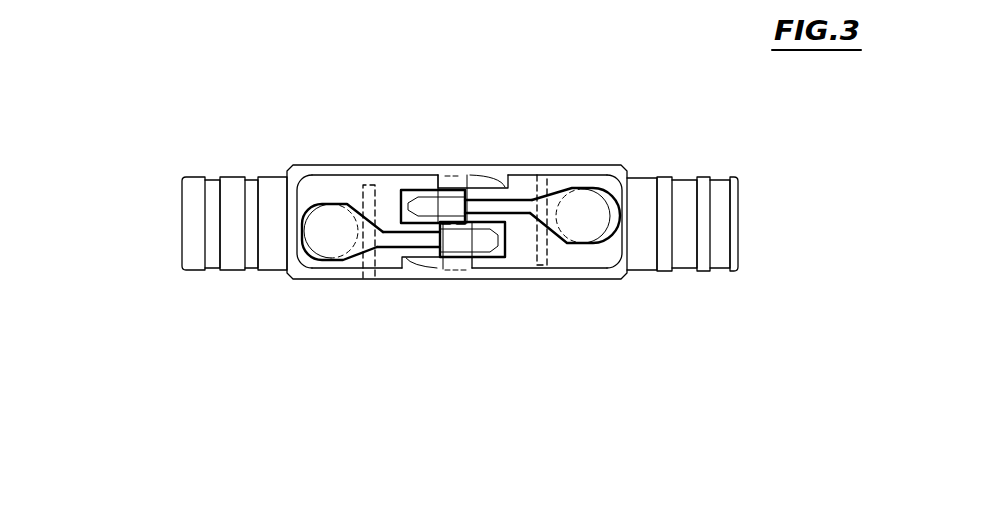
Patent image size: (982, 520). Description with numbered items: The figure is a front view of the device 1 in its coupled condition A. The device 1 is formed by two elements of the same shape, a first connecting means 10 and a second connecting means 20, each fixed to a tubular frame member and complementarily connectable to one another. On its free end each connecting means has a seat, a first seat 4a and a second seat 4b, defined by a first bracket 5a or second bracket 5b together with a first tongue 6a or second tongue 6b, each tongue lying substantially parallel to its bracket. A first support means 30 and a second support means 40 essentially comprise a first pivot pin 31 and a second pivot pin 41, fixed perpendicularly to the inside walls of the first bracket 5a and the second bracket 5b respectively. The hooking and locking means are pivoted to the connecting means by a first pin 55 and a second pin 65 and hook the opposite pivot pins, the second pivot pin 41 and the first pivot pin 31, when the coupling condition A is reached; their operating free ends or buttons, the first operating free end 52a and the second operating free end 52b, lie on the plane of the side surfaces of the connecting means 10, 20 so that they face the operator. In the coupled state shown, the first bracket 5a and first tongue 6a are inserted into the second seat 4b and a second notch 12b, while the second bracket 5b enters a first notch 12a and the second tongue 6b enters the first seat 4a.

The device 1 is at (168, 148).
The first connecting means 10 is at (636, 155).
The second connecting means 20 is at (308, 150).
The first support means 30 is at (450, 296).
The first pivot pin 31 is at (412, 283).
The second support means 40 is at (437, 148).
The second pivot pin 41 is at (420, 165).
The first seat 4a is at (485, 250).
The second seat 4b is at (418, 240).
The first bracket 5a is at (495, 257).
The second bracket 5b is at (493, 168).
The first tongue 6a is at (468, 167).
The second tongue 6b is at (473, 265).
The first notch 12a is at (498, 170).
The second notch 12b is at (418, 276).
The first operating free end 52a is at (582, 215).
The second operating free end 52b is at (330, 230).
The first pin 55 is at (567, 160).
The second pin 65 is at (357, 165).
The coupling condition A is at (153, 304).